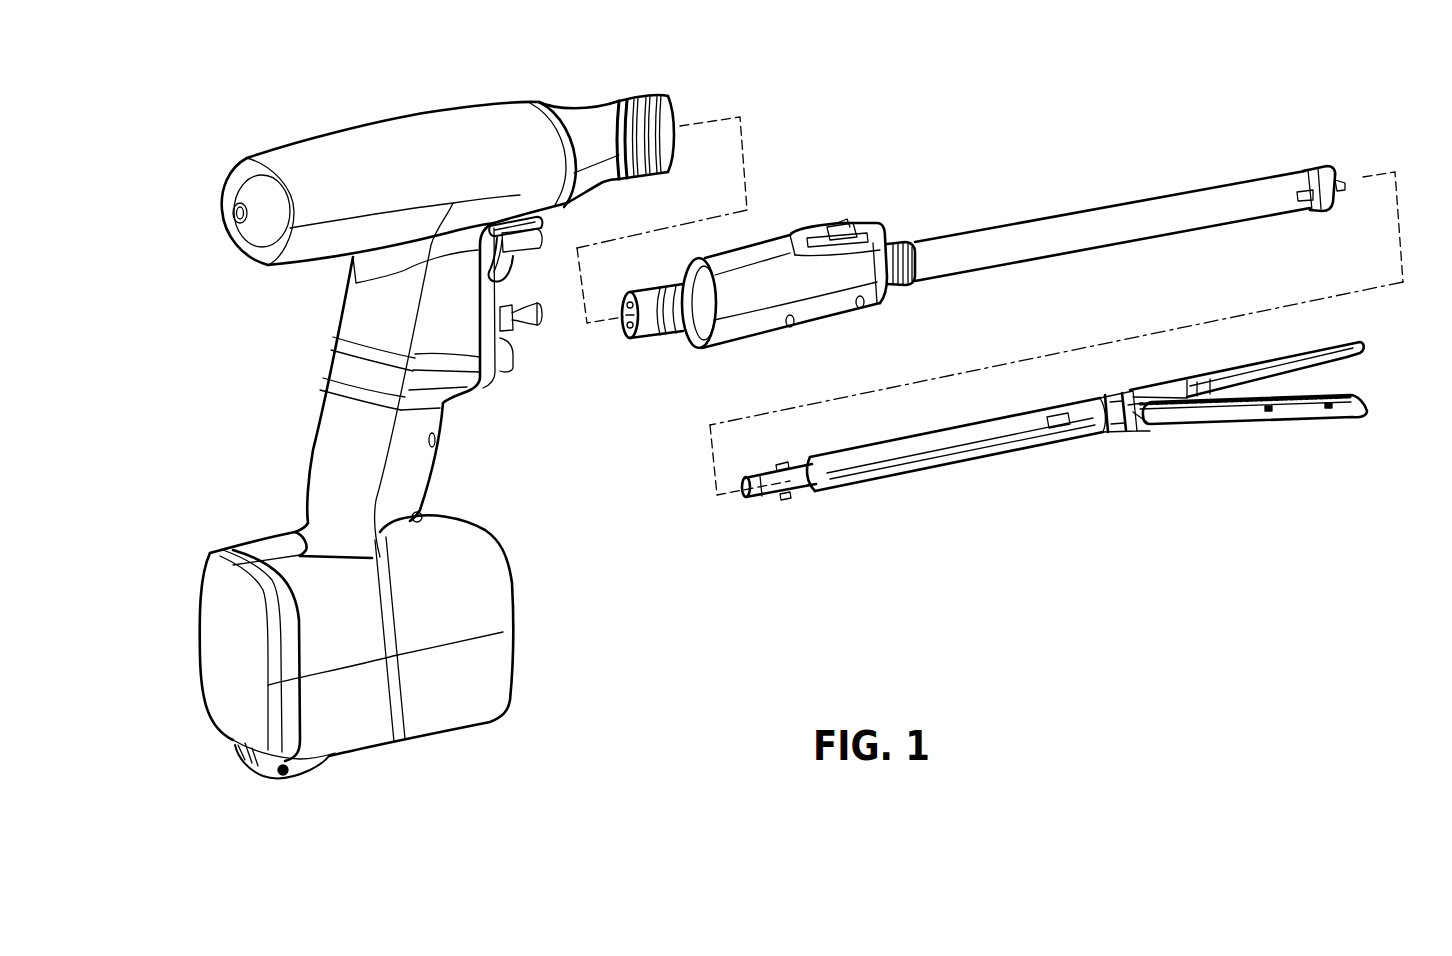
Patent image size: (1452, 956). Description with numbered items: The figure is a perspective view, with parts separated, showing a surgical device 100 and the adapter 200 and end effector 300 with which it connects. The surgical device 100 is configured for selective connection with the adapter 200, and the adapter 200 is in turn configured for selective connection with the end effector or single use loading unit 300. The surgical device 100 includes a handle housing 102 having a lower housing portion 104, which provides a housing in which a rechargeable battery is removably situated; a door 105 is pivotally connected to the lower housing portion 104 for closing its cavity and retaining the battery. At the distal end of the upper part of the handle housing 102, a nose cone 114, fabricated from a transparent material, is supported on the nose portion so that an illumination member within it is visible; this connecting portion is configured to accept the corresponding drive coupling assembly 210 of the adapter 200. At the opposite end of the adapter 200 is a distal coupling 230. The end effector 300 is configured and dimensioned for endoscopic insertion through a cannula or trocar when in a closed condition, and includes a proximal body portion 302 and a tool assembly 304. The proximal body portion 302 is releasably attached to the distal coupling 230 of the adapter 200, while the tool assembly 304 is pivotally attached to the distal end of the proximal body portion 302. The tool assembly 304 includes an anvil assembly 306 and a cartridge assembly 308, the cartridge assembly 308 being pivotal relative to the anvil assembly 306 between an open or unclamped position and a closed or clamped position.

The surgical device 100 is at (411, 391).
The handle housing 102 is at (254, 145).
The nose cone 114 is at (575, 110).
The lower housing portion 104 is at (363, 646).
The door 105 is at (210, 626).
The adapter 200 is at (989, 249).
The drive coupling assembly 210 is at (657, 327).
The distal coupling 230 is at (1312, 167).
The end effector 300 is at (1080, 412).
The proximal body portion 302 is at (882, 482).
The tool assembly 304 is at (1274, 392).
The anvil assembly 306 is at (1352, 342).
The cartridge assembly 308 is at (1352, 424).